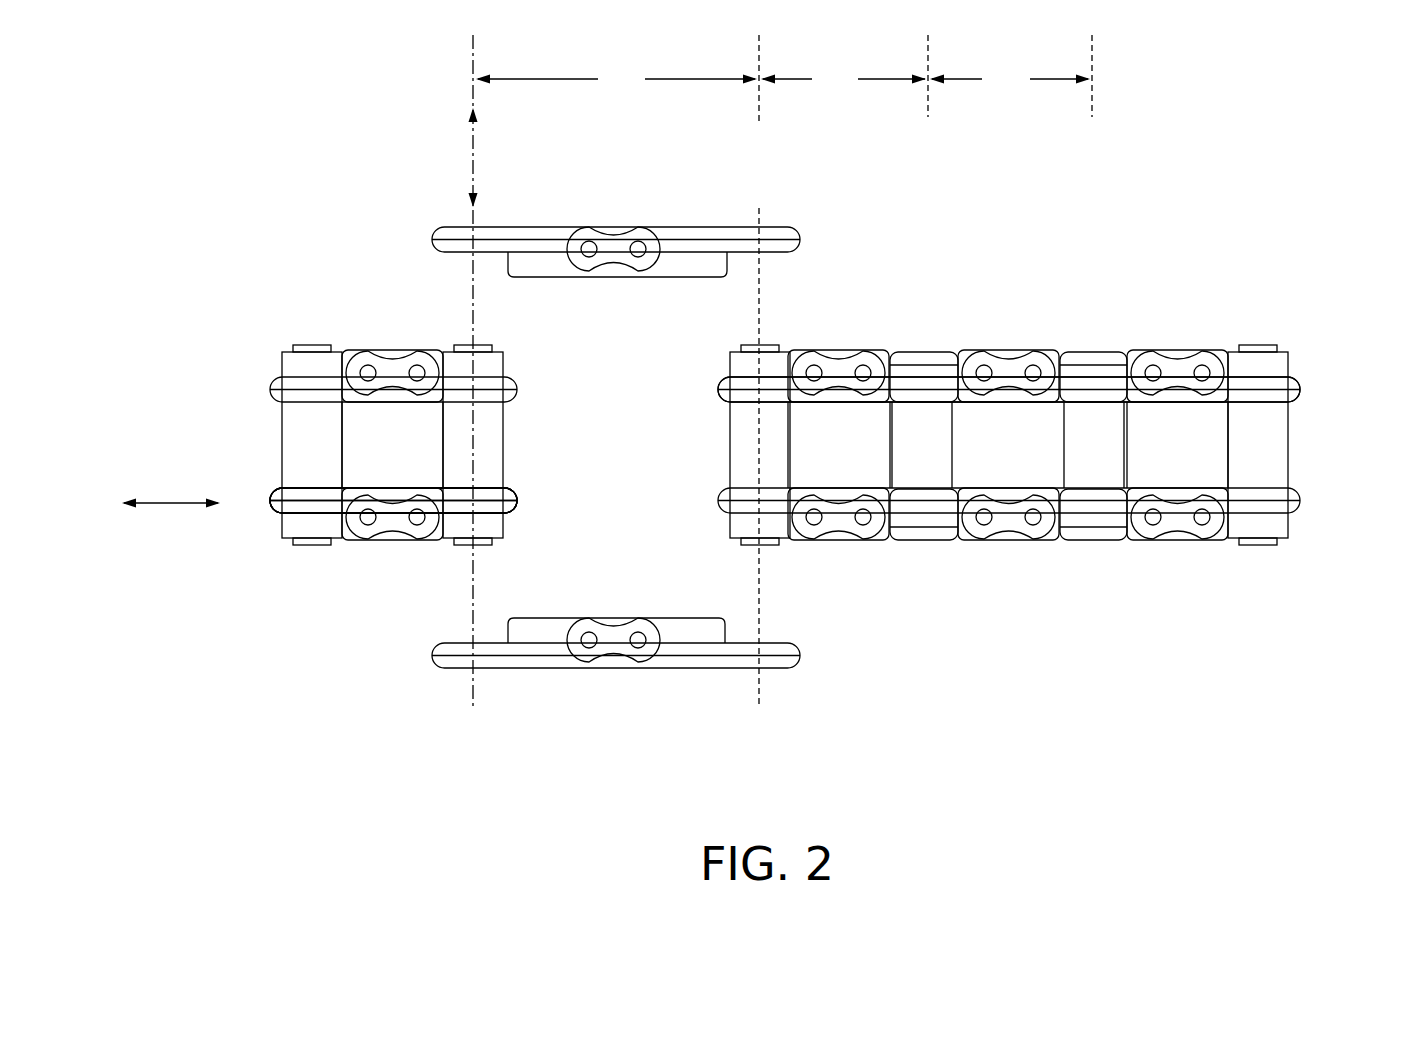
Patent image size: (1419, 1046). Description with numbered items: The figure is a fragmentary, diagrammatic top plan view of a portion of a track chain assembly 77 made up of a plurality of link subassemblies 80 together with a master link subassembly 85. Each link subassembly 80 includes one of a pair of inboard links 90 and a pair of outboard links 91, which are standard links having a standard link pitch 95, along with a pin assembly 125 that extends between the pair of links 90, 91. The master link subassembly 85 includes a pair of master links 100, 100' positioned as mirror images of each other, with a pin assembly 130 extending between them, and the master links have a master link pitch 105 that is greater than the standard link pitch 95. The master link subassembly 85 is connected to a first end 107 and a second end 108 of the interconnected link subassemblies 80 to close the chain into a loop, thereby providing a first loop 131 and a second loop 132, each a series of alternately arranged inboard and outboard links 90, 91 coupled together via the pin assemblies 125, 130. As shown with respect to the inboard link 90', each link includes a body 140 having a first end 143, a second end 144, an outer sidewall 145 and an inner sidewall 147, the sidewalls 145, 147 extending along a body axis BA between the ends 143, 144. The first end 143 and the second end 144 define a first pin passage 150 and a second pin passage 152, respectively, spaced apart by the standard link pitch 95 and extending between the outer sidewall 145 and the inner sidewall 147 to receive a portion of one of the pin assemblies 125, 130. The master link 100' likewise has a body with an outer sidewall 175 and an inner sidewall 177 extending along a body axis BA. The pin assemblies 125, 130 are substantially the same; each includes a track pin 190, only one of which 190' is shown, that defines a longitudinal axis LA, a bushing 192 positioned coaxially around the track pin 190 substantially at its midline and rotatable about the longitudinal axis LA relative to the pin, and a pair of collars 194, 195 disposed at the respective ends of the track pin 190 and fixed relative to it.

The track chain assembly 77 is at (1304, 236).
The link subassembly 80 is at (344, 247).
The master link subassembly 85 is at (604, 208).
The inboard link 90 is at (797, 440).
The inboard link 90' is at (392, 566).
The outboard link 91 is at (978, 352).
The standard link pitch 95 is at (926, 76).
The master link 100 is at (656, 228).
The master link 100' is at (601, 691).
The master link pitch 105 is at (617, 371).
The first end 107 is at (452, 542).
The second end 108 is at (772, 546).
The pin assembly 125 is at (437, 451).
The pin assembly 130 is at (796, 474).
The first loop 131 is at (256, 370).
The second loop 132 is at (266, 494).
The body 140 is at (357, 540).
The first end 143 is at (277, 512).
The second end 144 is at (508, 502).
The outer sidewall 145 is at (467, 518).
The inner sidewall 147 is at (317, 480).
The first pin passage 150 is at (314, 524).
The second pin passage 152 is at (492, 481).
The outer sidewall 175 is at (704, 680).
The inner sidewall 177 is at (703, 610).
The track pin 190 is at (757, 284).
The track pin 190' is at (541, 327).
The bushing 192 is at (283, 448).
The collar 194 is at (277, 530).
The collar 195 is at (283, 362).
The longitudinal axis LA is at (471, 155).
The body axis BA is at (172, 500).